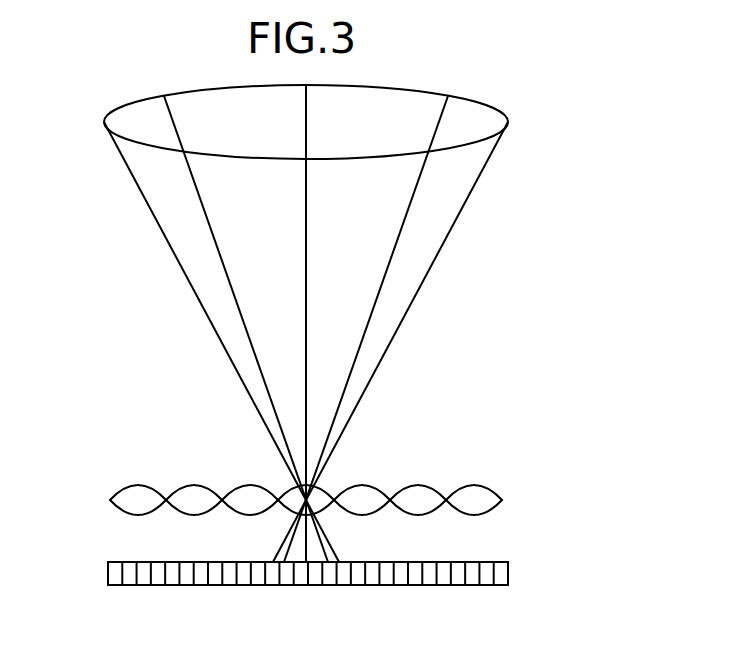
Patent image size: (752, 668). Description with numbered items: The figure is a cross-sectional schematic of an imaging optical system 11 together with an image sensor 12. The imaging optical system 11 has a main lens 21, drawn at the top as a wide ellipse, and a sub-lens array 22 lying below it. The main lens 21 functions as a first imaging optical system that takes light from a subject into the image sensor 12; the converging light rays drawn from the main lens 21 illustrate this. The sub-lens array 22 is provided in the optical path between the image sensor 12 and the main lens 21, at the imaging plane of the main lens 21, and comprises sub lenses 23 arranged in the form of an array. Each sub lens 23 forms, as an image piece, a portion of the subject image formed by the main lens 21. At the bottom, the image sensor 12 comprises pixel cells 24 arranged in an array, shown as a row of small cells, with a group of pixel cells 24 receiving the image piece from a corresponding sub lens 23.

The imaging optical system 11 is at (387, 323).
The image sensor 12 is at (320, 573).
The main lens 21 is at (333, 122).
The sub-lens array 22 is at (314, 499).
The sub lens 23 is at (126, 490).
The pixel cell 24 is at (120, 573).